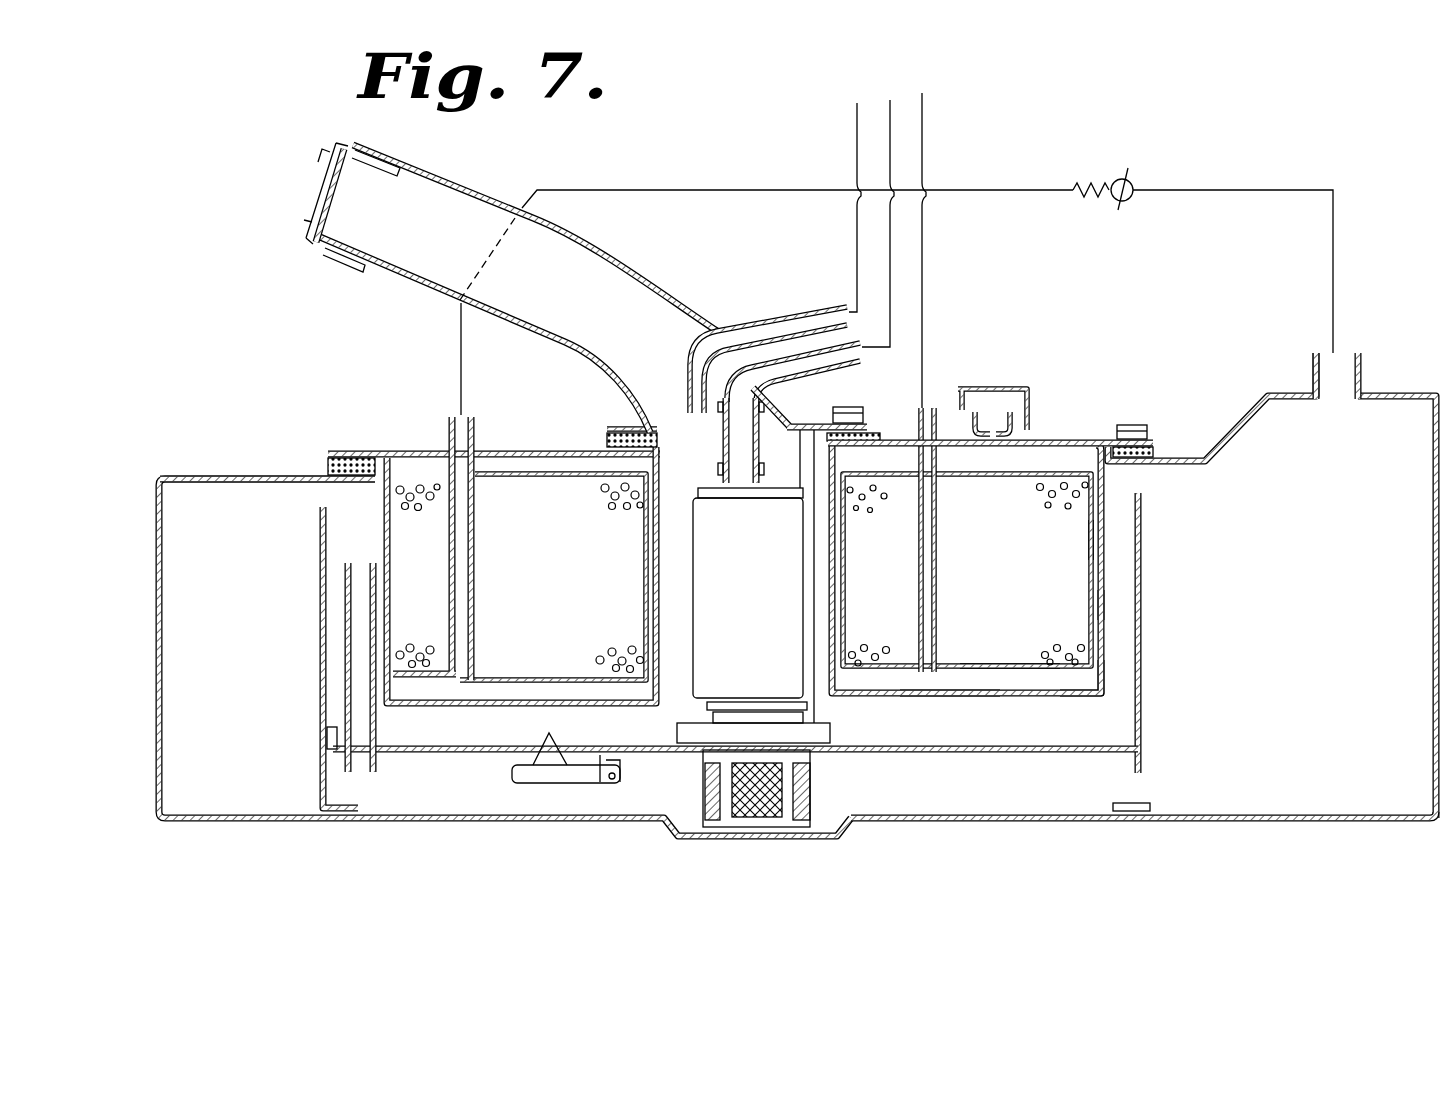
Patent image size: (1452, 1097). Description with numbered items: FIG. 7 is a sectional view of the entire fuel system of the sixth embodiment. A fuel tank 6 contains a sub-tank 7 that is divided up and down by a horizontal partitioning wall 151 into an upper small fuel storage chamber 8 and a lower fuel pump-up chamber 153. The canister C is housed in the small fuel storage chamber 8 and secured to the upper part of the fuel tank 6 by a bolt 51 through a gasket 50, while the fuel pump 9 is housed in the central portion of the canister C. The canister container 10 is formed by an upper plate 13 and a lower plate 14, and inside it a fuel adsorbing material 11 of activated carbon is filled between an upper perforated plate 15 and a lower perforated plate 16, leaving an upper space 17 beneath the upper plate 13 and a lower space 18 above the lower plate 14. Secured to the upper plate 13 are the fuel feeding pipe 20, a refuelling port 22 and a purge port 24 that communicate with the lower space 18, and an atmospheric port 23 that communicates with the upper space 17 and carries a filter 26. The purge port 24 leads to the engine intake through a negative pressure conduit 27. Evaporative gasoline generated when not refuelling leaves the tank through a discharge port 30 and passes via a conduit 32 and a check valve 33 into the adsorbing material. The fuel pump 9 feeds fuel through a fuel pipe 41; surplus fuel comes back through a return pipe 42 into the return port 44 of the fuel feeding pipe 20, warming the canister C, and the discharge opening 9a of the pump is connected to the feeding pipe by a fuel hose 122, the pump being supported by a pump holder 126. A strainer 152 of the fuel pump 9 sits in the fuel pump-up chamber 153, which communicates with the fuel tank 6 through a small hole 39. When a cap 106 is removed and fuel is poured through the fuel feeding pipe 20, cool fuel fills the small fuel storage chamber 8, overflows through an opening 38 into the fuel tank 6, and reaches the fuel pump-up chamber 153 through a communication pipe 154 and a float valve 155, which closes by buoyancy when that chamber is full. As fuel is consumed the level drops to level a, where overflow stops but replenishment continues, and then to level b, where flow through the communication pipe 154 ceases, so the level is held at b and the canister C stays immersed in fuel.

The fuel tank 6 is at (1325, 820).
The sub-tank 7 is at (1143, 670).
The small fuel storage chamber 8 is at (1118, 604).
The fuel pump 9 is at (797, 675).
The discharge opening 9a is at (742, 482).
The canister container 10 is at (1104, 573).
The fuel adsorbing material 11 is at (1104, 494).
The canister C is at (1104, 540).
The upper plate 13 is at (507, 453).
The lower plate 14 is at (985, 697).
The upper perforated plate 15 is at (530, 457).
The lower perforated plate 16 is at (1020, 672).
The upper space 17 is at (548, 465).
The lower space 18 is at (1070, 683).
The fuel feeding pipe 20 is at (471, 196).
The refuelling port 22 is at (447, 430).
The atmospheric port 23 is at (1010, 440).
The purge port 24 is at (937, 407).
The filter 26 is at (1030, 388).
The negative pressure conduit 27 is at (925, 254).
The discharge port 30 is at (1343, 374).
The conduit 32 is at (1099, 174).
The check valve 33 is at (1029, 184).
The opening 38 is at (313, 482).
The small hole 39 is at (1150, 790).
The fuel pipe 41 is at (893, 102).
The return pipe 42 is at (853, 132).
The return port 44 is at (783, 310).
The gasket 50 is at (1157, 453).
The bolt 51 is at (1140, 423).
The cap 106 is at (303, 214).
The fuel hose 122 is at (726, 430).
The pump holder 126 is at (808, 580).
The horizontal partitioning wall 151 is at (978, 755).
The strainer 152 is at (757, 813).
The fuel pump-up chamber 153 is at (1040, 812).
The communication pipe 154 is at (350, 678).
The float valve 155 is at (553, 780).
The level a is at (320, 507).
The level b is at (345, 563).